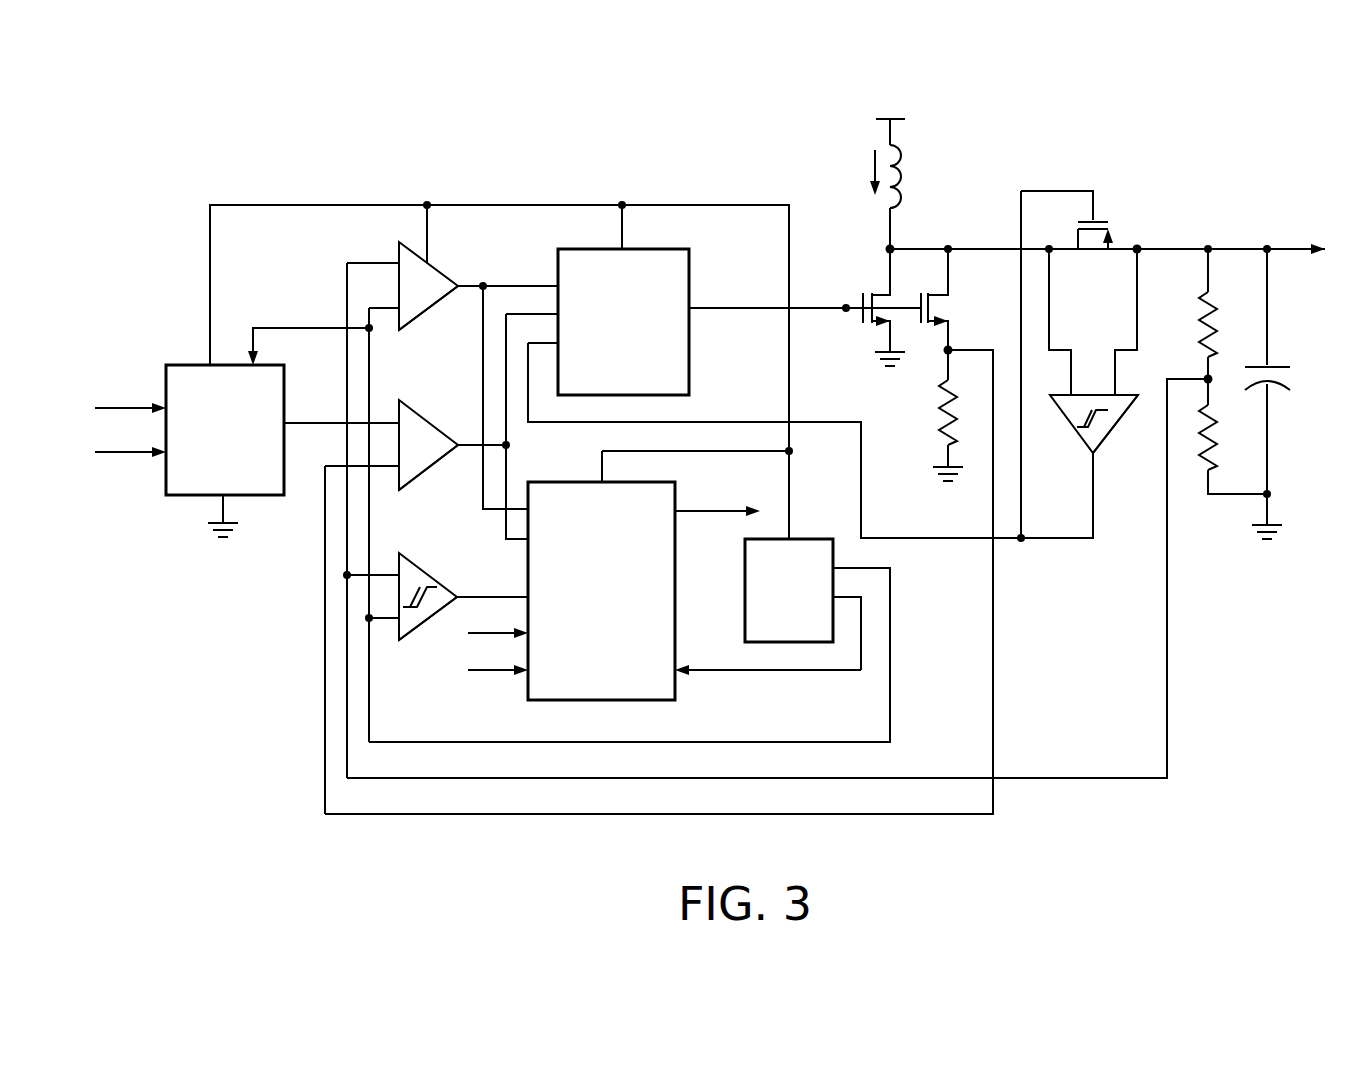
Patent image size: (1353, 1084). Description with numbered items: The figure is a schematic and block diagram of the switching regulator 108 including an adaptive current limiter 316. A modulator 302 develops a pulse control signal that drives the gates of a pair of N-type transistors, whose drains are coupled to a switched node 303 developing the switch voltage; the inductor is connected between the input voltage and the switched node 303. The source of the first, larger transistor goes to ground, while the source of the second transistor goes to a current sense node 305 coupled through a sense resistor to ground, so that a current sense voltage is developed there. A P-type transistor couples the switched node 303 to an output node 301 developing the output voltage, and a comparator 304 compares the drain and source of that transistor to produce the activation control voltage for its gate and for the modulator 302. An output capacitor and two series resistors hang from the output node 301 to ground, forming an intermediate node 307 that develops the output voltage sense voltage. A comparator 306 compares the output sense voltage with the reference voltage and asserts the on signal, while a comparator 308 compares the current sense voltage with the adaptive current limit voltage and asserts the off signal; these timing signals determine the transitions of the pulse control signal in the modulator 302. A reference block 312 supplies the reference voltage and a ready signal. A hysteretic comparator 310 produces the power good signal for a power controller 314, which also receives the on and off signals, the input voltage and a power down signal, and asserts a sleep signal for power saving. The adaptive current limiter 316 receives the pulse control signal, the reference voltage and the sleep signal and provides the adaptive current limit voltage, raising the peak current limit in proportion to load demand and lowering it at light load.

The DC-DC switching regulator 108 is at (592, 886).
The output node 301 is at (1134, 253).
The modulator 302 is at (603, 357).
The switched node 303 is at (887, 247).
The comparator 304 is at (1075, 428).
The current sense node 305 is at (955, 350).
The comparator 306 is at (428, 316).
The intermediate node 307 is at (1166, 606).
The comparator 308 is at (428, 417).
The hysteretic comparator 310 is at (428, 572).
The reference block 312 is at (770, 627).
The power controller 314 is at (583, 641).
The adaptive current limiter 316 is at (183, 365).